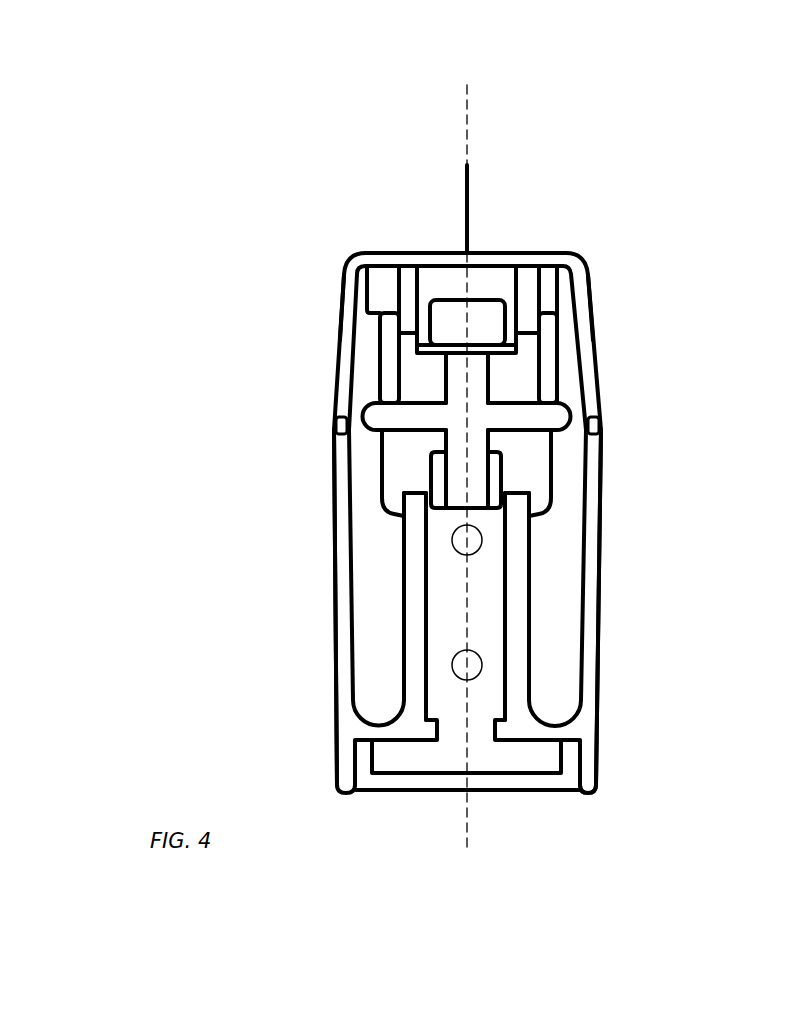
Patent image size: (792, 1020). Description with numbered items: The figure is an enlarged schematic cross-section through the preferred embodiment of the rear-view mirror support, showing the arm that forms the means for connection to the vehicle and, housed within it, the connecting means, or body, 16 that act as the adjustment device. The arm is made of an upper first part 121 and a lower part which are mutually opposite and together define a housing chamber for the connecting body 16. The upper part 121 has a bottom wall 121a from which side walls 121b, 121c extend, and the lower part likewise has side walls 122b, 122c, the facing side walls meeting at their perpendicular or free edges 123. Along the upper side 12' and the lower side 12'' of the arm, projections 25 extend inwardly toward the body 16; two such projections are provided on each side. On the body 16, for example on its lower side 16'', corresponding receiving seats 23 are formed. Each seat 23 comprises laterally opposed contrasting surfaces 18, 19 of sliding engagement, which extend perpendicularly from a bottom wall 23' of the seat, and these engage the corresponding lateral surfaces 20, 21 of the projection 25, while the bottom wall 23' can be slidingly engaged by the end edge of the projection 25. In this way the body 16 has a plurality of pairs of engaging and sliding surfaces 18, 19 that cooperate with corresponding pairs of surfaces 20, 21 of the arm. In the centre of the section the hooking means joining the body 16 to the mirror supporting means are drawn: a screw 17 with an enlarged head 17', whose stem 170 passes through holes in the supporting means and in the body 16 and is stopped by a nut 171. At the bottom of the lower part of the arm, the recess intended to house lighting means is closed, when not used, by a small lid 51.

The screw 17 is at (477, 455).
The enlarged head 17' is at (467, 222).
The upper side 12' is at (520, 185).
The lower side 12'' is at (631, 825).
The connecting means 16 is at (656, 358).
The lower side 16'' is at (485, 446).
The engaging and sliding surface 18 is at (421, 264).
The engaging and sliding surface 19 is at (477, 288).
The lateral surface 20 is at (398, 310).
The lateral surface 21 is at (560, 280).
The receiving seat 23 is at (464, 460).
The bottom wall 23' is at (465, 455).
The projection 25 is at (404, 250).
The small lid 51 is at (500, 792).
The first part 121 is at (556, 250).
The bottom wall 121a is at (371, 250).
The side wall 121b is at (343, 297).
The side wall 121c is at (590, 300).
The side wall 122b is at (336, 642).
The side wall 122c is at (598, 668).
The free edge 123 is at (340, 418).
The stem 170 is at (482, 443).
The nut 171 is at (502, 482).